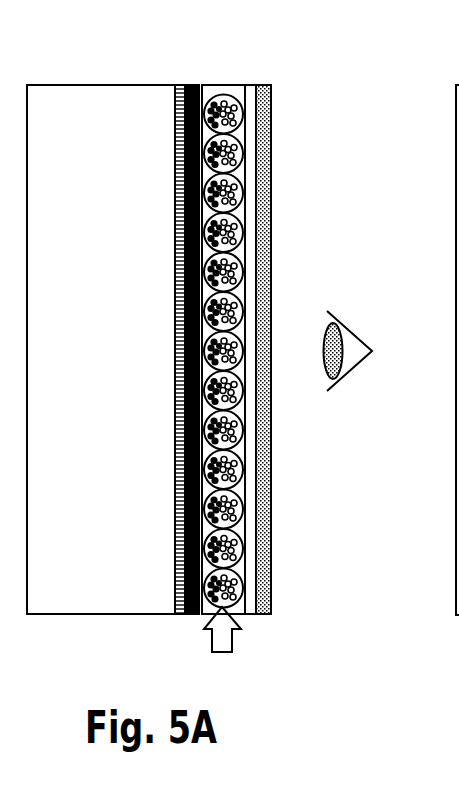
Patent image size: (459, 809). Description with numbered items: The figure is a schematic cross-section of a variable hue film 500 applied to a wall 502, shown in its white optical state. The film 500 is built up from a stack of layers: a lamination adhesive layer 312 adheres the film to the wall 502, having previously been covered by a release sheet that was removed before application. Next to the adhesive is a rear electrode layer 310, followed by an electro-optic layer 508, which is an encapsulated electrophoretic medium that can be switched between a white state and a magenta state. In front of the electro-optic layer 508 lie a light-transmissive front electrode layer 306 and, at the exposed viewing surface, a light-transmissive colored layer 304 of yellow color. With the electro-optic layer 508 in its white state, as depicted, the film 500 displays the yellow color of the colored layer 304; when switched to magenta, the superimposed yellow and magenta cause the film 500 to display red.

The wall 502 is at (120, 222).
The lamination adhesive layer 312 is at (181, 88).
The rear electrode layer 310 is at (192, 88).
The electro-optic layer 508 is at (223, 273).
The light-transmissive front electrode layer 306 is at (250, 88).
The light-transmissive colored layer 304 is at (263, 88).
The variable hue film 500 is at (221, 645).